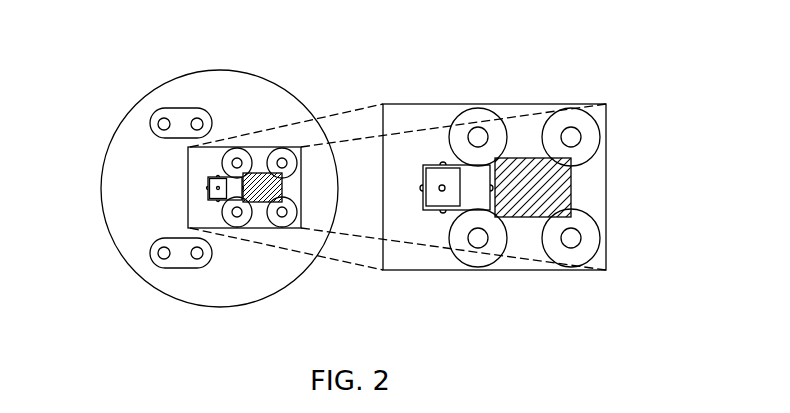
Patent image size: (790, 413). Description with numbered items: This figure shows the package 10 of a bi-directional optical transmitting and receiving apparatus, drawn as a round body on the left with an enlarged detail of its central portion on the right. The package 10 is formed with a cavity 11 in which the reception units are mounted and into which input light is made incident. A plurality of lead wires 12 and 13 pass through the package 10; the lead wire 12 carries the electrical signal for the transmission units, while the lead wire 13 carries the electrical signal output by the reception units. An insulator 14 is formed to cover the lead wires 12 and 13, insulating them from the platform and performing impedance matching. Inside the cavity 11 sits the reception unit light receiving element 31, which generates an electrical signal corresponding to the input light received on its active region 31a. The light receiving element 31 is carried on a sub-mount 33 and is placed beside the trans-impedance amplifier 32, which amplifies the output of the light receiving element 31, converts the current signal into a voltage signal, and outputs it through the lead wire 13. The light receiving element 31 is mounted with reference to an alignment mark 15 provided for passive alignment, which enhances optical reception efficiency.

The package 10 is at (280, 82).
The cavity 11 is at (200, 168).
The lead wire 12 is at (157, 126).
The lead wire 13 is at (572, 237).
The insulator 14 is at (180, 118).
The alignment mark 15 is at (443, 162).
The reception unit light receiving element 31 is at (432, 197).
The active region 31a is at (442, 192).
The trans-impedance amplifier 32 is at (560, 183).
The sub-mount 33 is at (472, 198).